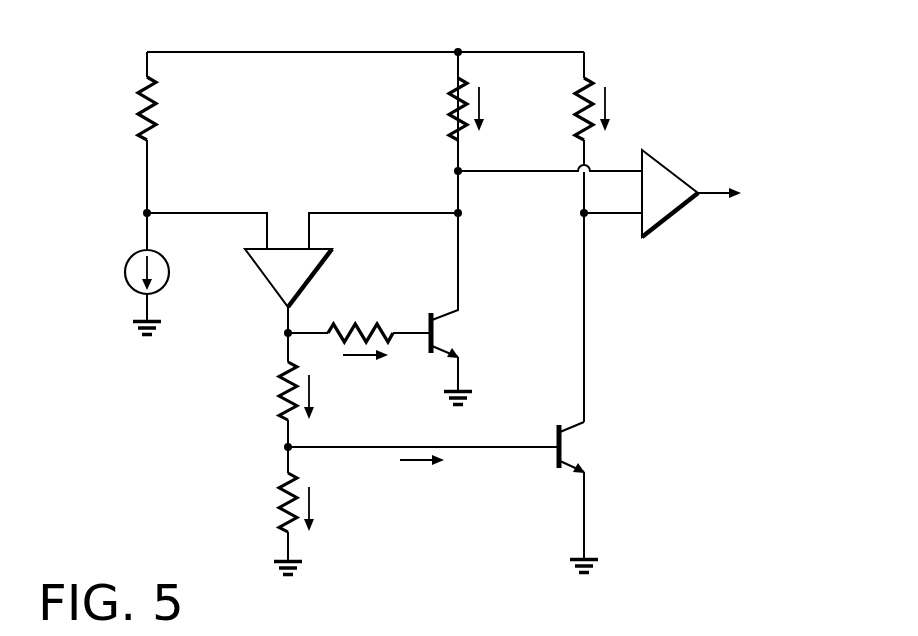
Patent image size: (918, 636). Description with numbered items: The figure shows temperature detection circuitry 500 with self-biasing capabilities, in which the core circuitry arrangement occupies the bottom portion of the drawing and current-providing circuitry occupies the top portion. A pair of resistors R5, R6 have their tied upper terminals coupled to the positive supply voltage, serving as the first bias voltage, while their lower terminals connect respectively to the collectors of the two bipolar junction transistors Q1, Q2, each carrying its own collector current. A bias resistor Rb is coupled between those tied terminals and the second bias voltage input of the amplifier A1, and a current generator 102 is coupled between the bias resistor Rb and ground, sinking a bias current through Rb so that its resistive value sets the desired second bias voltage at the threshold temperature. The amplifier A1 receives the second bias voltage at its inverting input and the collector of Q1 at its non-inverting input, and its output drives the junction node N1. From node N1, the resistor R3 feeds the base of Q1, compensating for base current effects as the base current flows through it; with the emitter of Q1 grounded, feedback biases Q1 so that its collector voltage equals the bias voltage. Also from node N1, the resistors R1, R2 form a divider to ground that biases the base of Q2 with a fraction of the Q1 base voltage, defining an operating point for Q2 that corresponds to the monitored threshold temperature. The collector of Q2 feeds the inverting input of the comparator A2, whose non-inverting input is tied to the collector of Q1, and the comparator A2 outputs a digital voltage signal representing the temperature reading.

The temperature detection circuitry 500 is at (680, 36).
The current generator 102 is at (170, 271).
The bias resistor Rb is at (132, 108).
The amplifier A1 is at (288, 278).
The comparator A2 is at (670, 193).
The junction node N1 is at (275, 333).
The resistor R1 is at (274, 391).
The resistor R2 is at (274, 502).
The resistor R3 is at (360, 322).
The resistor R5 is at (443, 109).
The resistor R6 is at (570, 109).
The bipolar junction transistor Q1 is at (458, 329).
The bipolar junction transistor Q2 is at (587, 447).